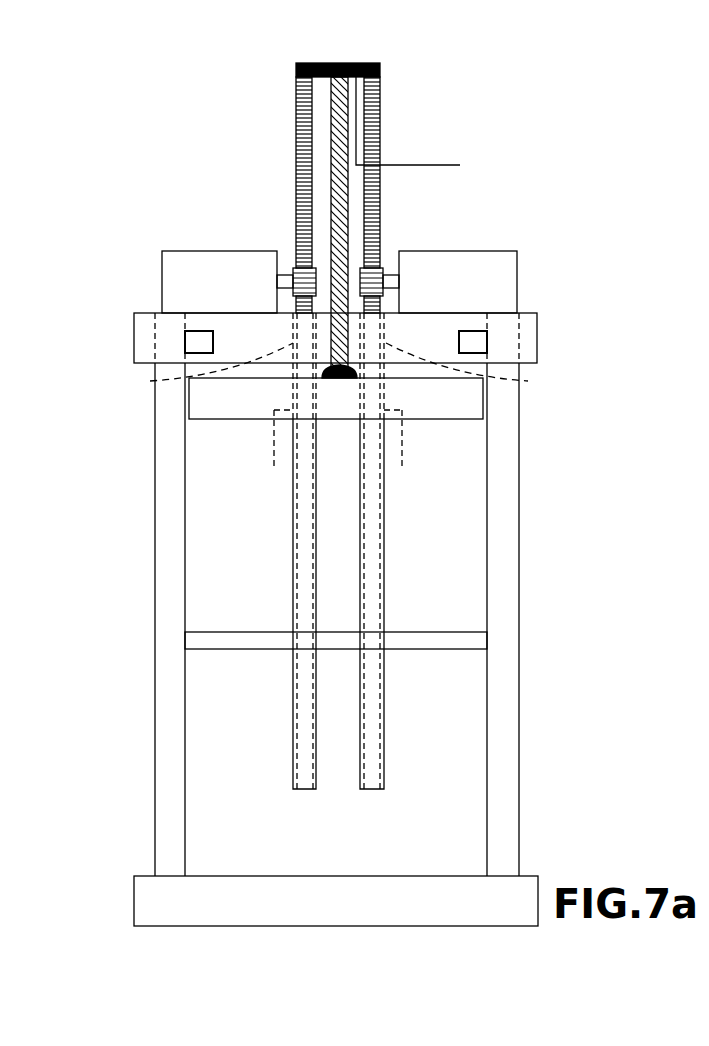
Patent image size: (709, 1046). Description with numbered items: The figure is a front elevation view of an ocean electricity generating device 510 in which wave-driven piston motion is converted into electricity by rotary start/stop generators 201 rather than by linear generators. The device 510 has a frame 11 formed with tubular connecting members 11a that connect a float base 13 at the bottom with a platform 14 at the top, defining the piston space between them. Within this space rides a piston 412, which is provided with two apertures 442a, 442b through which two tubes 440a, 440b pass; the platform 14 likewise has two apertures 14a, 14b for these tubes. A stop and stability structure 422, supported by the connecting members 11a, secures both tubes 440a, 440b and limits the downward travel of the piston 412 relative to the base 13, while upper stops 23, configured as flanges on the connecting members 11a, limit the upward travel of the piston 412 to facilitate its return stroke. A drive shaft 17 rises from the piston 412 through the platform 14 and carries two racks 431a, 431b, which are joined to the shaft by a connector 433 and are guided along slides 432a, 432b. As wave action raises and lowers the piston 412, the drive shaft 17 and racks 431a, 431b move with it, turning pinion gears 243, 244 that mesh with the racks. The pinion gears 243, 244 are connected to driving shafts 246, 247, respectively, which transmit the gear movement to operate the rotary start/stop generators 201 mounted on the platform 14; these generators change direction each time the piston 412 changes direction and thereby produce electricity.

The device 510 is at (187, 170).
The frame 11 is at (527, 618).
The connecting members 11a is at (173, 733).
The float base 13 is at (155, 900).
The platform 14 is at (143, 326).
The aperture 14a is at (205, 367).
The aperture 14b is at (479, 367).
The drive shaft 17 is at (340, 218).
The upper stops 23 is at (196, 342).
The rotary start/stop generator 201 is at (192, 253).
The pinion gear 243 is at (381, 268).
The pinion gear 244 is at (298, 268).
The driving shaft 246 is at (392, 281).
The driving shaft 247 is at (286, 281).
The piston 412 is at (247, 405).
The stop and stability structure 422 is at (215, 649).
The rack 431a is at (298, 119).
The rack 431b is at (367, 119).
The slide 432a is at (296, 147).
The slide 432b is at (381, 146).
The connector 433 is at (427, 126).
The tube 440a is at (298, 573).
The tube 440b is at (375, 594).
The aperture 442a is at (270, 450).
The aperture 442b is at (412, 452).